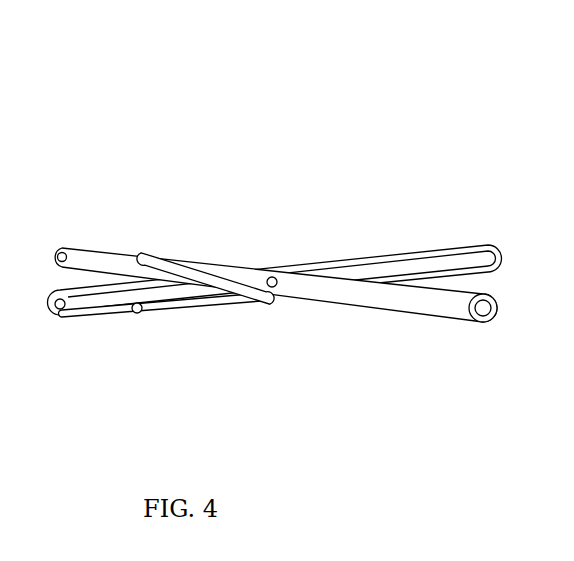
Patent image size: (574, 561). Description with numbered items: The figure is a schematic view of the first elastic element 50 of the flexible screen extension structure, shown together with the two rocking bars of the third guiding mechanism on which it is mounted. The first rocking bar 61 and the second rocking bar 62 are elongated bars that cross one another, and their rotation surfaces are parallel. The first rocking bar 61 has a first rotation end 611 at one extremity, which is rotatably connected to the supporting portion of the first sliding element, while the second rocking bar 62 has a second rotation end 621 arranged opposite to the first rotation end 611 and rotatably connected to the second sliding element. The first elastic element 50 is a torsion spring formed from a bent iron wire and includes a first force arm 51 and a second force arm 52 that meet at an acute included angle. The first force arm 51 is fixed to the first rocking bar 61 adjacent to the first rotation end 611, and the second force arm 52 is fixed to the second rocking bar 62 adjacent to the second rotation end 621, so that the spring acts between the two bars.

The first elastic element 50 is at (236, 163).
The first force arm 51 is at (219, 305).
The second force arm 52 is at (188, 270).
The first rocking bar 61 is at (375, 268).
The second rocking bar 62 is at (362, 300).
The first rotation end 611 is at (58, 314).
The second rotation end 621 is at (63, 255).